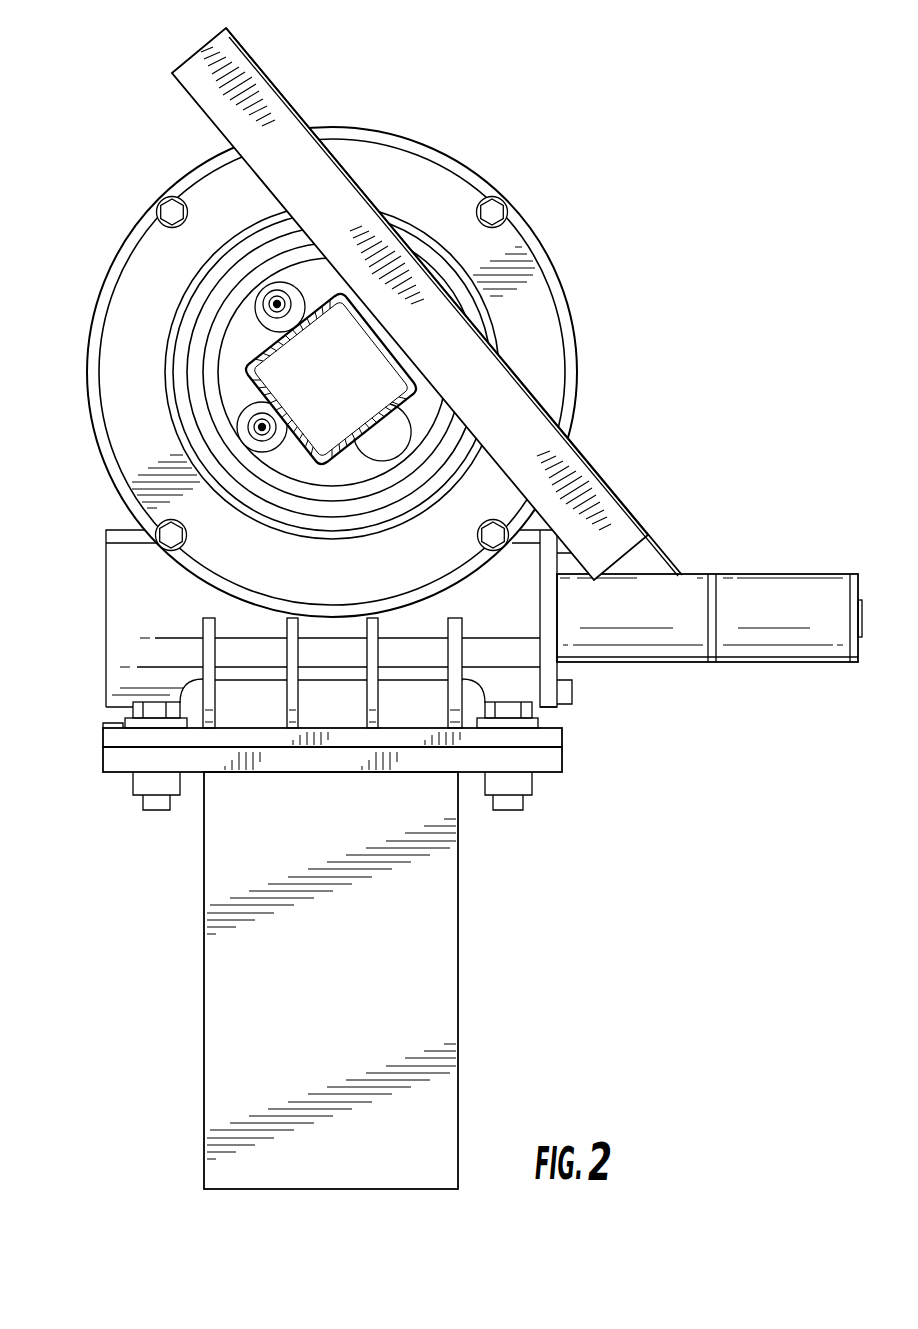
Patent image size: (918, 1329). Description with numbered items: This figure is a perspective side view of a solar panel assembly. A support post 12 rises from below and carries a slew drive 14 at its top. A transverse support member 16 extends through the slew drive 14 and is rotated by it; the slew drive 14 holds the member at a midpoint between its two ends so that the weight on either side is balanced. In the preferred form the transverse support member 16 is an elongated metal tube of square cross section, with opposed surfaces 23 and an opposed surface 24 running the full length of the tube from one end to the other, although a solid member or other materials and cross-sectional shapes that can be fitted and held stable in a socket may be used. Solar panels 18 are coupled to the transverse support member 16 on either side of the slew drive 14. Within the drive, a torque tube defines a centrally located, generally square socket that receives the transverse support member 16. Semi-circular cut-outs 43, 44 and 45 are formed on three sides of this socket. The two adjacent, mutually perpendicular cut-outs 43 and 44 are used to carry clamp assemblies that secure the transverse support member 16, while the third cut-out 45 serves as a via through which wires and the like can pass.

The support post 12 is at (446, 939).
The slew drive 14 is at (457, 157).
The transverse support member 16 is at (315, 297).
The solar panels 18 is at (578, 452).
The opposed surfaces 23 is at (250, 347).
The opposed surface 24 is at (300, 453).
The semi-circular cut-out 43 is at (253, 407).
The semi-circular cut-out 44 is at (258, 314).
The semi-circular cut-out 45 is at (392, 436).